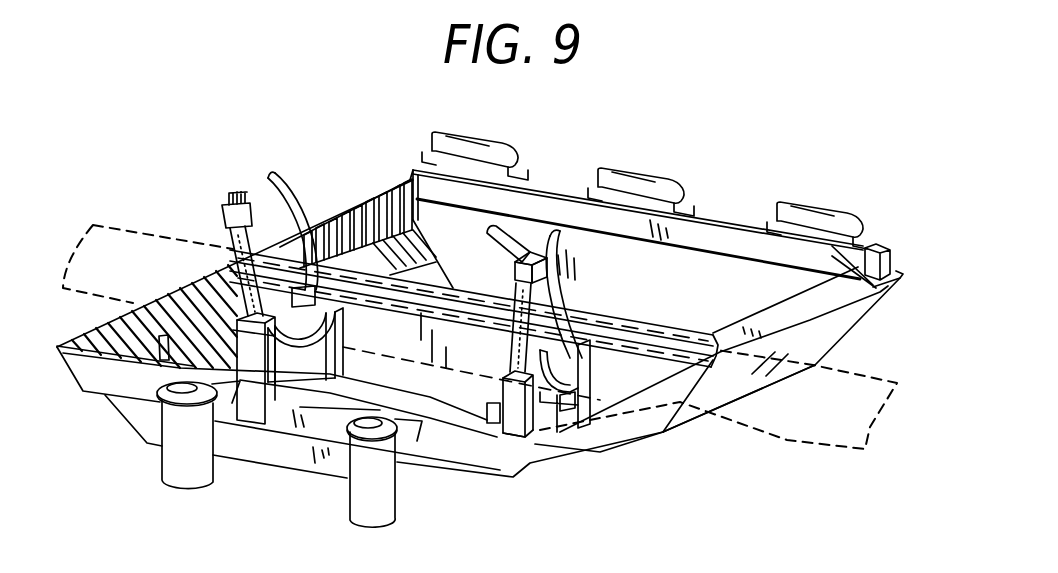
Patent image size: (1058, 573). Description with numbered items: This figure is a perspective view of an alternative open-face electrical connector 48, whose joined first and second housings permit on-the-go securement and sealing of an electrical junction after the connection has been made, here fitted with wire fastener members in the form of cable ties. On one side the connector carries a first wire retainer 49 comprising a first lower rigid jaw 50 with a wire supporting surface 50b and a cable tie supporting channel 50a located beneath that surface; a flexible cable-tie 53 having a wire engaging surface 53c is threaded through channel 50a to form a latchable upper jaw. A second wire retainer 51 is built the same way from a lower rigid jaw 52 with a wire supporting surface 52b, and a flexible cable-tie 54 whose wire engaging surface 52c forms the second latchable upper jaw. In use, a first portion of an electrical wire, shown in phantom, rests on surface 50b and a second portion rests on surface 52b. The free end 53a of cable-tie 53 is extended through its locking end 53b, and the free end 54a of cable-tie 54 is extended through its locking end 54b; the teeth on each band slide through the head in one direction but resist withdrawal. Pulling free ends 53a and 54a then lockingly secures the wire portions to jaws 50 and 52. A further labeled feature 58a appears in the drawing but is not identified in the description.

The open-face electrical connector 48 is at (850, 190).
The first wire retainer 49 is at (252, 345).
The first lower rigid jaw 50 is at (241, 418).
The cable tie supporting channel 50a is at (290, 360).
The wire supporting surface 50b is at (242, 400).
The second wire retainer 51 is at (608, 377).
The lower rigid jaw 52 is at (537, 445).
The wire supporting surface 52b is at (557, 405).
The wire engaging surface 52c is at (505, 374).
The flexible cable-tie 53 is at (253, 205).
The free end 53a is at (273, 173).
The locking end 53b is at (222, 220).
The wire engaging surface 53c is at (267, 190).
The flexible cable-tie 54 is at (586, 250).
The free end 54a is at (490, 227).
The locking end 54b is at (560, 232).
The retainer slot 58a is at (565, 408).